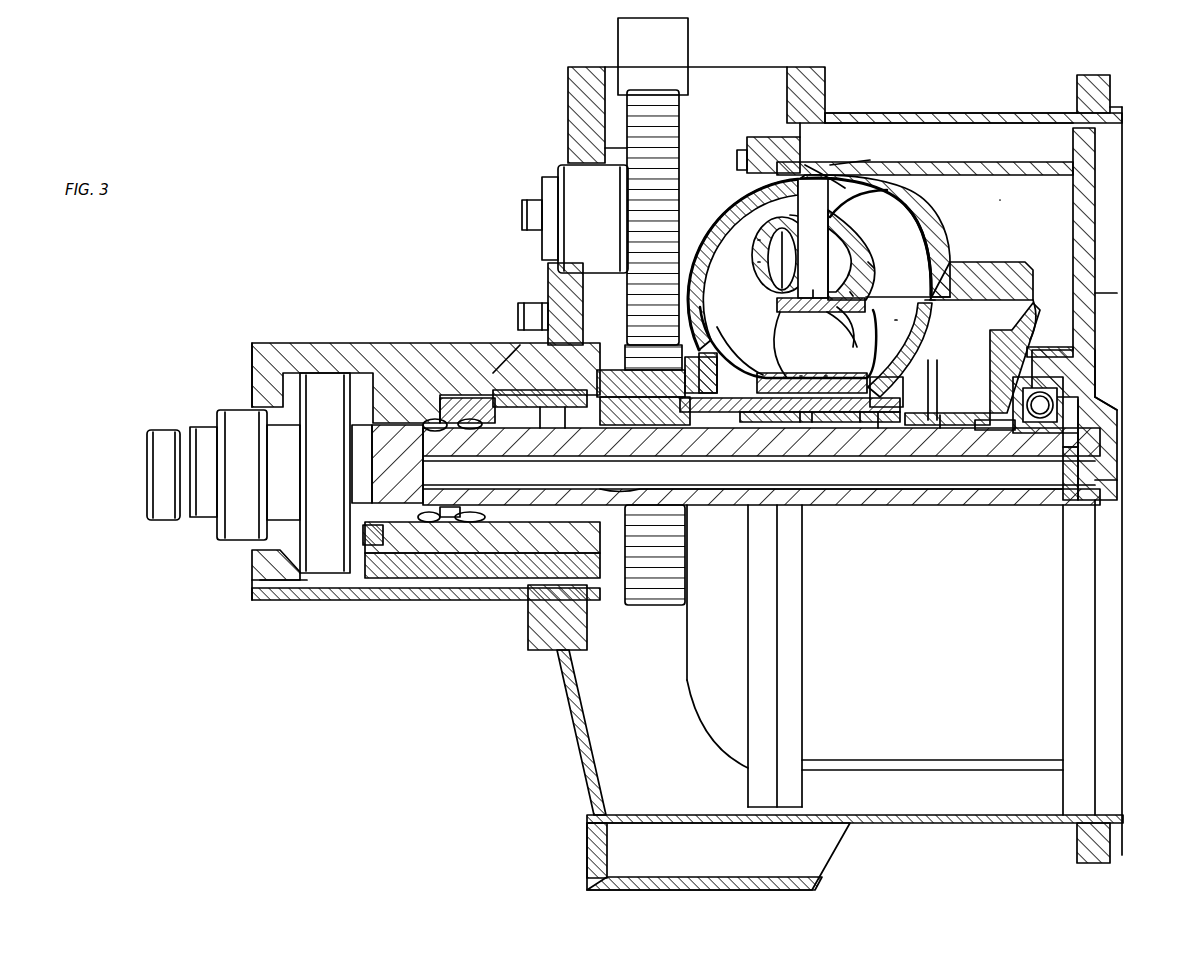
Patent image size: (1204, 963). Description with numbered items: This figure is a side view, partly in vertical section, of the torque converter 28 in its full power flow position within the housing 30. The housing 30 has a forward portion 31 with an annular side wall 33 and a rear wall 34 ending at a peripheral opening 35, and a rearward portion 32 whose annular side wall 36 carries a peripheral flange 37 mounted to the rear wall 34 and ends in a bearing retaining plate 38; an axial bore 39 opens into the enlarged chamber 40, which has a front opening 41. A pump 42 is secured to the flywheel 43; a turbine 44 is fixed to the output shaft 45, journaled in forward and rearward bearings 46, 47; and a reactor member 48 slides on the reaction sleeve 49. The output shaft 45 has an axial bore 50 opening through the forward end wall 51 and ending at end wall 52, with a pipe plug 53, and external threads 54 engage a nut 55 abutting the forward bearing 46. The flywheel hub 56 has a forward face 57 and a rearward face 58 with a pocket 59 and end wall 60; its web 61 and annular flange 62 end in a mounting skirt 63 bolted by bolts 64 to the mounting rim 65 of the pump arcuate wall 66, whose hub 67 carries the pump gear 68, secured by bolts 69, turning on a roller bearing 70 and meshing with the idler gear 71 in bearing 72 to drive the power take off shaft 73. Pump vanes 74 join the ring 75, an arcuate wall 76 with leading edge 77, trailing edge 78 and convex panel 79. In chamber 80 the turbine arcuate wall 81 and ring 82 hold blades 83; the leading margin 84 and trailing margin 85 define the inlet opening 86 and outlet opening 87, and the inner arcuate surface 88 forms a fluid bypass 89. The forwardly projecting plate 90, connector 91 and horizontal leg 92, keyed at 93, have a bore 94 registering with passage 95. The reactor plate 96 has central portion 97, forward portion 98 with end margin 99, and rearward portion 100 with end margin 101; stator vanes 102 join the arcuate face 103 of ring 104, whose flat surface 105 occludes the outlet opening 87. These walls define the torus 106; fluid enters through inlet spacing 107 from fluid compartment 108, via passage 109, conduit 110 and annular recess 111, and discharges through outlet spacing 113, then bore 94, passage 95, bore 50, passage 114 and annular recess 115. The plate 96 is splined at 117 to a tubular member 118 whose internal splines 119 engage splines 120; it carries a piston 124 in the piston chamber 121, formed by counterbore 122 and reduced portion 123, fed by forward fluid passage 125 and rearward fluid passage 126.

The torque converter 28 is at (486, 125).
The housing 30 is at (882, 103).
The forward portion 31 is at (918, 114).
The rearward portion 32 is at (345, 345).
The annular side wall 33 is at (976, 114).
The rear wall 34 is at (578, 728).
The peripheral opening 35 is at (600, 612).
The annular side wall 36 is at (420, 346).
The peripheral flange 37 is at (538, 310).
The bearing retaining plate 38 is at (265, 356).
The axial bore 39 is at (365, 560).
The enlarged chamber 40 is at (643, 718).
The opening 41 is at (1110, 795).
The pump 42 is at (712, 202).
The flywheel 43 is at (1110, 240).
The turbine 44 is at (938, 205).
The output shaft 45 is at (840, 497).
The forward bearing 46 is at (1040, 420).
The rearward bearing 47 is at (327, 542).
The reactor member 48 is at (918, 365).
The reaction sleeve 49 is at (742, 420).
The axial bore 50 is at (840, 483).
The forward end wall 51 is at (1095, 503).
The end wall 52 is at (430, 473).
The pipe plug 53 is at (1070, 498).
The external threads 54 is at (1075, 437).
The nut 55 is at (1083, 432).
The hub 56 is at (1122, 390).
The forward face 57 is at (1120, 480).
The rearward face 58 is at (1025, 350).
The pocket 59 is at (1100, 390).
The end wall 60 is at (1085, 412).
The web 61 is at (1104, 296).
The annular flange 62 is at (1022, 165).
The mounting skirt 63 is at (806, 160).
The bolts 64 is at (740, 166).
The mounting rim 65 is at (757, 146).
The arcuate wall 66 is at (716, 218).
The hub 67 is at (703, 422).
The pump gear 68 is at (648, 347).
The bolts 69 is at (757, 364).
The roller bearing 70 is at (665, 400).
The idler gear 71 is at (647, 275).
The bearing 72 is at (596, 221).
The power take off shaft 73 is at (668, 52).
The vanes 74 is at (751, 235).
The ring 75 is at (760, 247).
The arcuate wall 76 is at (760, 265).
The leading edge 77 is at (770, 303).
The trailing edge 78 is at (789, 211).
The convex panel 79 is at (812, 250).
The chamber 80 is at (1034, 221).
The arcuate wall 81 is at (933, 237).
The ring 82 is at (876, 268).
The vanes 83 is at (903, 243).
The leading margin 84 is at (858, 203).
The trailing margin 85 is at (862, 298).
The inlet opening 86 is at (819, 220).
The outlet opening 87 is at (822, 284).
The inner arcuate surface 88 is at (896, 224).
The fluid bypass 89 is at (854, 263).
The forwardly projecting plate 90 is at (975, 272).
The connector 91 is at (1030, 330).
The horizontal leg 92 is at (938, 418).
The key 93 is at (963, 426).
The bore 94 is at (1015, 412).
The passage 95 is at (990, 433).
The concavely-curved plate 96 is at (800, 388).
The central portion 97 is at (825, 388).
The forward portion 98 is at (926, 338).
The end margin 99 is at (922, 320).
The rearward portion 100 is at (746, 351).
The end margin 101 is at (722, 328).
The stator vanes 102 is at (822, 335).
The arcuate face 103 is at (836, 316).
The ring 104 is at (834, 308).
The flat surface 105 is at (836, 310).
The torus 106 is at (884, 150).
The inlet spacing 107 is at (942, 306).
The fluid compartment 108 is at (998, 338).
The passage 109 is at (940, 425).
The conduit 110 is at (878, 428).
The annular recess 111 is at (500, 410).
The outlet spacing 113 is at (836, 172).
The passage 114 is at (430, 445).
The annular recess 115 is at (455, 392).
The splines 117 is at (800, 424).
The tubular member 118 is at (770, 422).
The internal splines 119 is at (818, 440).
The splines 120 is at (860, 424).
The piston chamber 121 is at (493, 372).
The counterbore 122 is at (518, 313).
The diametrically reduced portion 123 is at (545, 410).
The piston 124 is at (563, 418).
The forward fluid passage 125 is at (550, 297).
The rearward fluid passage 126 is at (503, 555).